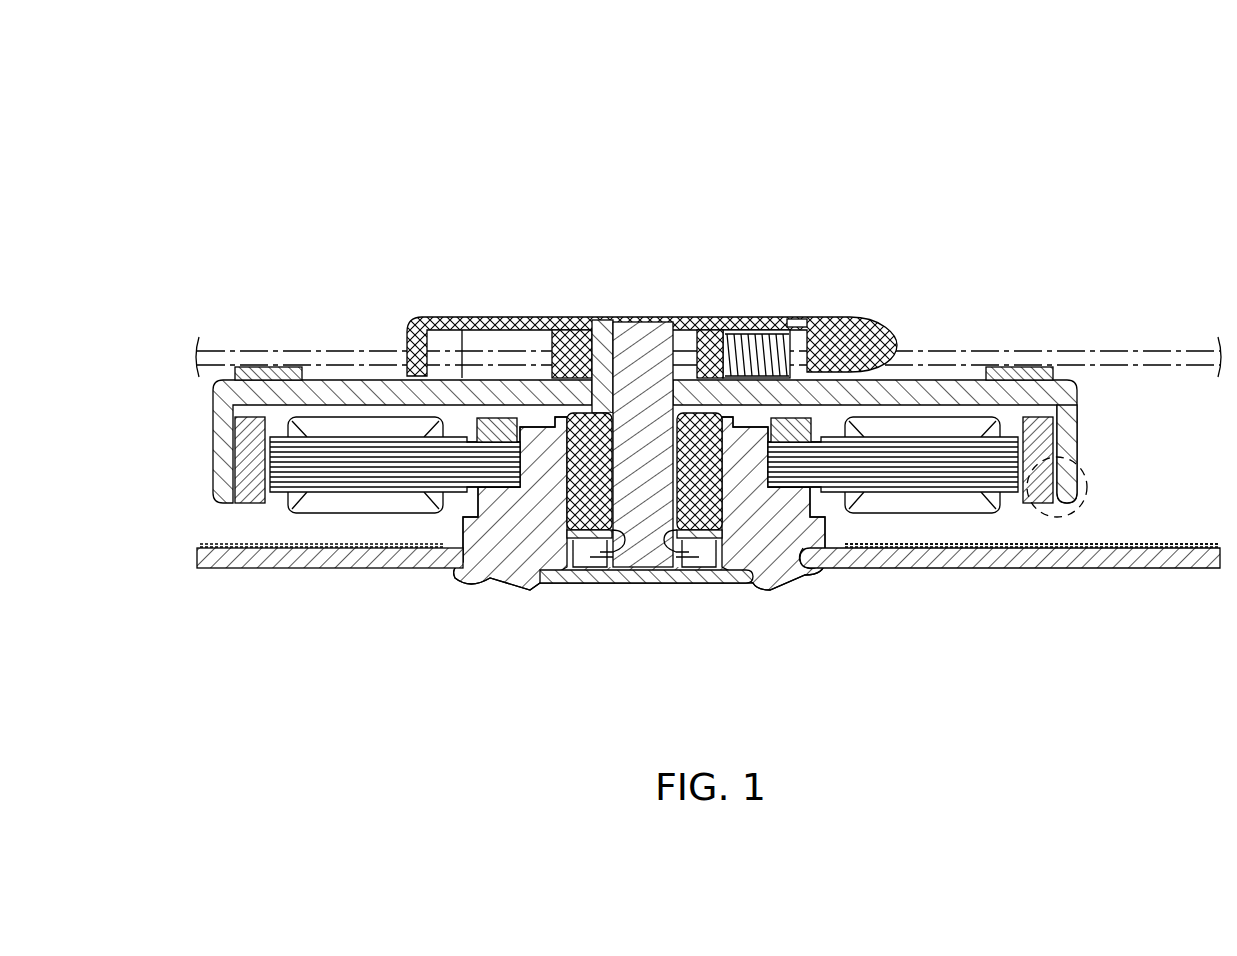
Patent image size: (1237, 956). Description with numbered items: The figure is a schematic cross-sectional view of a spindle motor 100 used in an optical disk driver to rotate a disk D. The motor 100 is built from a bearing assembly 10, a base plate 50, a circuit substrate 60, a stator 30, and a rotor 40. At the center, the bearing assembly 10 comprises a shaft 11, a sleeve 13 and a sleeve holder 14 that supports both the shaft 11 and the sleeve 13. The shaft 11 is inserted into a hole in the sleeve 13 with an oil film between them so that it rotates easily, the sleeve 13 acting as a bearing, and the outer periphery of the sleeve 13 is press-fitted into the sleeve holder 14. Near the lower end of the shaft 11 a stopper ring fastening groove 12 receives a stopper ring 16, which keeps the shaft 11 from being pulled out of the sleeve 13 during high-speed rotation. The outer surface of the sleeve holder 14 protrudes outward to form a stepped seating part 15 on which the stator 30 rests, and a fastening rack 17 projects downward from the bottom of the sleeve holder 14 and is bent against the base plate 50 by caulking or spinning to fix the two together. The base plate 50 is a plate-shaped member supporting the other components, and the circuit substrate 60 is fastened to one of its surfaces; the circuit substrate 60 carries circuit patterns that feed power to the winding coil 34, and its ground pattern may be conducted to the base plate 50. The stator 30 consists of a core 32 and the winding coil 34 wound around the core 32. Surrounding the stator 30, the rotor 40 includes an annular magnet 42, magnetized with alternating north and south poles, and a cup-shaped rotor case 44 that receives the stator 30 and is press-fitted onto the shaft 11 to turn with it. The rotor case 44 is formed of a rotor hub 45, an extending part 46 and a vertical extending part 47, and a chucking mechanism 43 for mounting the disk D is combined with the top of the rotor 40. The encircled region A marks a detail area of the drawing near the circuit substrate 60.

The motor 100 is at (805, 203).
The bearing assembly 10 is at (650, 461).
The shaft 11 is at (632, 322).
The stopper ring fastening groove 12 is at (660, 584).
The sleeve 13 is at (563, 404).
The sleeve holder 14 is at (785, 522).
The seating part 15 is at (483, 478).
The stopper ring 16 is at (712, 543).
The fastening rack 17 is at (807, 572).
The stator 30 is at (591, 425).
The core 32 is at (280, 457).
The winding coil 34 is at (310, 508).
The rotor 40 is at (697, 375).
The magnet 42 is at (1030, 497).
The chucking mechanism 43 is at (857, 319).
The rotor case 44 is at (906, 369).
The rotor hub 45 is at (691, 330).
The extending part 46 is at (982, 379).
The vertical extending part 47 is at (1070, 430).
The base plate 50 is at (1002, 575).
The circuit substrate 60 is at (1083, 539).
The region A is at (1086, 472).
The disk D is at (1050, 349).